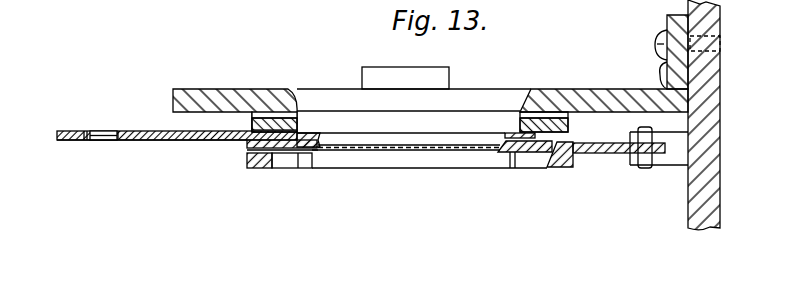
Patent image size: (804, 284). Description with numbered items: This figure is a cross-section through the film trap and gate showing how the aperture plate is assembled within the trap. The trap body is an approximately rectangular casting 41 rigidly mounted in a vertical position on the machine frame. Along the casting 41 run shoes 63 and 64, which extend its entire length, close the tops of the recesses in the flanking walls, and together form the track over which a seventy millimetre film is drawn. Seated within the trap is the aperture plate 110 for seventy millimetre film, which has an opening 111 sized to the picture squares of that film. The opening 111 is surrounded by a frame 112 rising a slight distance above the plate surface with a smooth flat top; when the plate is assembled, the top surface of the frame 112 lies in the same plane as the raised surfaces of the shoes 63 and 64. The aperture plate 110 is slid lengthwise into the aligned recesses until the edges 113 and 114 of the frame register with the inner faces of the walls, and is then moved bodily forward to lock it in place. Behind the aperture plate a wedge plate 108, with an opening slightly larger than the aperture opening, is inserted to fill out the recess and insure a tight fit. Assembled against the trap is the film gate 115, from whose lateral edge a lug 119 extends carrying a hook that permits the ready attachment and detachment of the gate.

The casting 41 is at (253, 88).
The wedge plate 108 is at (146, 112).
The aperture plate 110 is at (146, 142).
The shoe 63 is at (247, 144).
The frame 112 is at (313, 150).
The edge of frame 113 is at (285, 150).
The opening 111 is at (384, 147).
The edge of frame 114 is at (515, 152).
The film gate 115 is at (559, 168).
The shoe 64 is at (548, 157).
The lug 119 is at (608, 153).